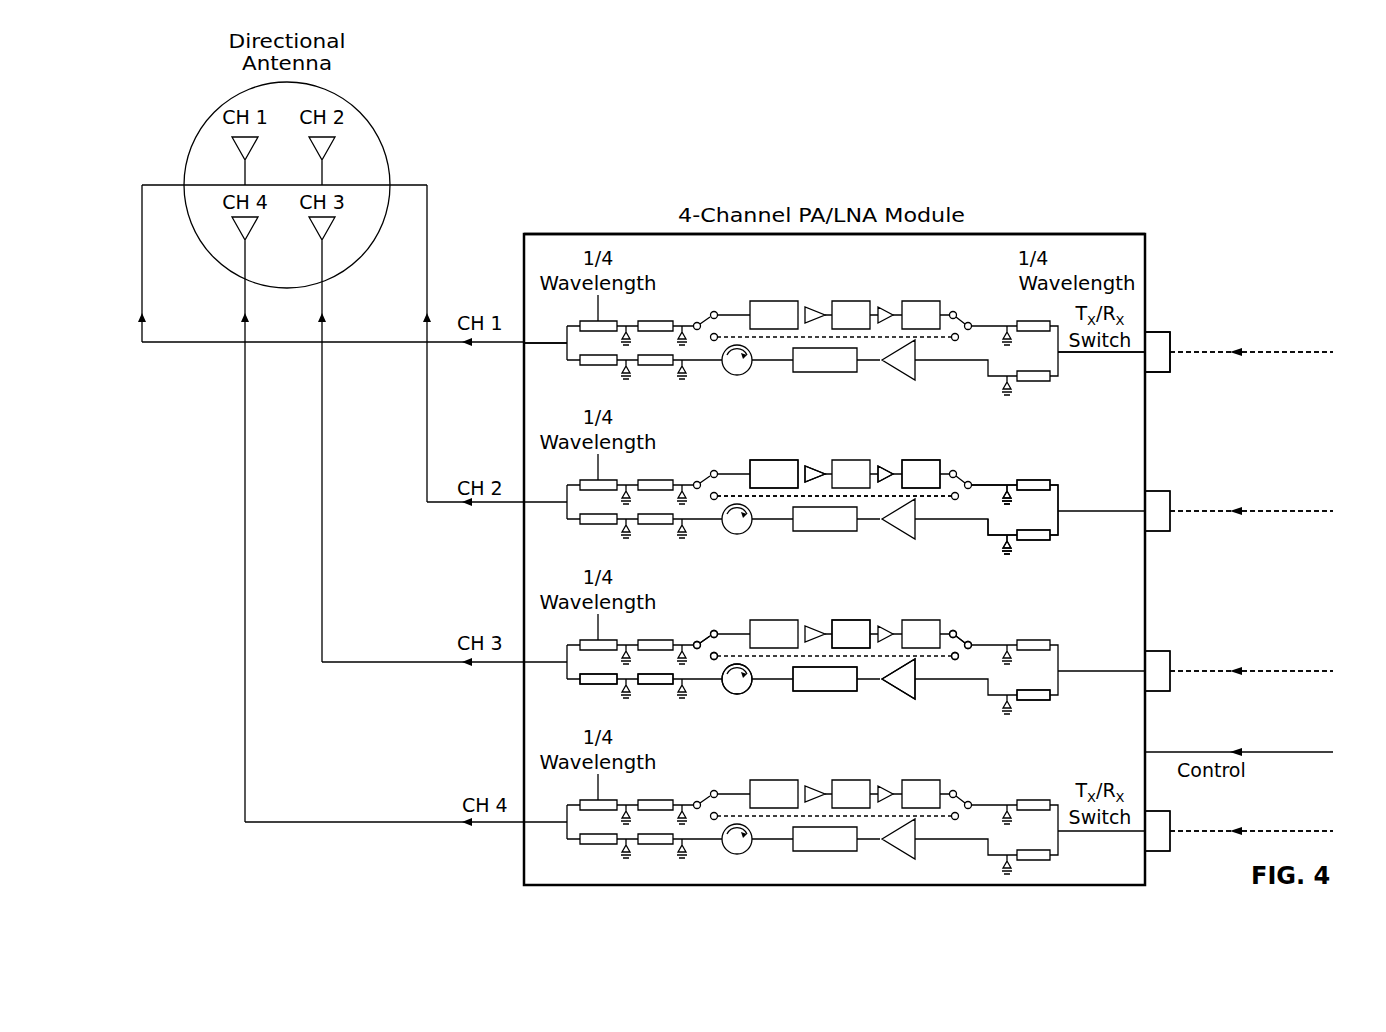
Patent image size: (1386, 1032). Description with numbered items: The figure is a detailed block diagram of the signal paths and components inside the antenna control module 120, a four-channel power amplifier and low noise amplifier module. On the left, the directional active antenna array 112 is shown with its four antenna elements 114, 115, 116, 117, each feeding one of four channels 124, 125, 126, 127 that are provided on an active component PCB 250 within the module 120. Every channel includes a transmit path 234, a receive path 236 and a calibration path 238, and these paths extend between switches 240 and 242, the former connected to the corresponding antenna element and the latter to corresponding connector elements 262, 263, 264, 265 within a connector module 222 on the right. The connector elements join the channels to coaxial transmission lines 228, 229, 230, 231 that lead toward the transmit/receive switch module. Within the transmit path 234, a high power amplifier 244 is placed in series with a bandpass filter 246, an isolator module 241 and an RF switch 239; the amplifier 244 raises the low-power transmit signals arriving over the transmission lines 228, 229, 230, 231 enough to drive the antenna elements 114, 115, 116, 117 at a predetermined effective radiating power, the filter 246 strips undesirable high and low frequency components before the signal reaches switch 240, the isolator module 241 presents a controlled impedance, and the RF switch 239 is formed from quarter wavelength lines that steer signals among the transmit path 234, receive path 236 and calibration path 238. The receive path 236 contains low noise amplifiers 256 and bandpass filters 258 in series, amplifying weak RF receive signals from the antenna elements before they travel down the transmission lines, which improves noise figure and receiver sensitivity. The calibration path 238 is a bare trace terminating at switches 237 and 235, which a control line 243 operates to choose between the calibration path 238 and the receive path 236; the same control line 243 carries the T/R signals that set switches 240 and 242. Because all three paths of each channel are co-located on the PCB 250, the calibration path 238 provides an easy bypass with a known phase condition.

The active antenna array 112 is at (208, 106).
The antenna element 114 is at (240, 150).
The antenna element 115 is at (333, 148).
The antenna element 116 is at (333, 225).
The antenna element 117 is at (240, 227).
The antenna control module 120 is at (1057, 215).
The channel 124 is at (430, 342).
The channel 125 is at (430, 502).
The channel 126 is at (388, 662).
The channel 127 is at (388, 822).
The connector module 222 is at (1169, 308).
The transmission line 228 is at (1310, 352).
The transmission line 229 is at (1310, 511).
The transmission line 230 is at (1310, 671).
The transmission line 231 is at (1310, 831).
The transmit path 234 is at (975, 522).
The switch 235 is at (710, 636).
The receive path 236 is at (940, 468).
The switch 237 is at (958, 660).
The calibration path 238 is at (925, 500).
The RF switch 239 is at (597, 686).
The switch 240 is at (557, 355).
The isolator module 241 is at (738, 695).
The switch 242 is at (1104, 361).
The control line 243 is at (1177, 752).
The high power amplifier 244 is at (920, 688).
The bandpass filter 246 is at (807, 693).
The active component PCB 250 is at (1008, 233).
The low noise amplifier 256 is at (812, 484).
The bandpass filter 258 is at (765, 460).
The connector element 262 is at (1172, 340).
The connector element 263 is at (1172, 500).
The connector element 264 is at (1172, 660).
The connector element 265 is at (1172, 819).